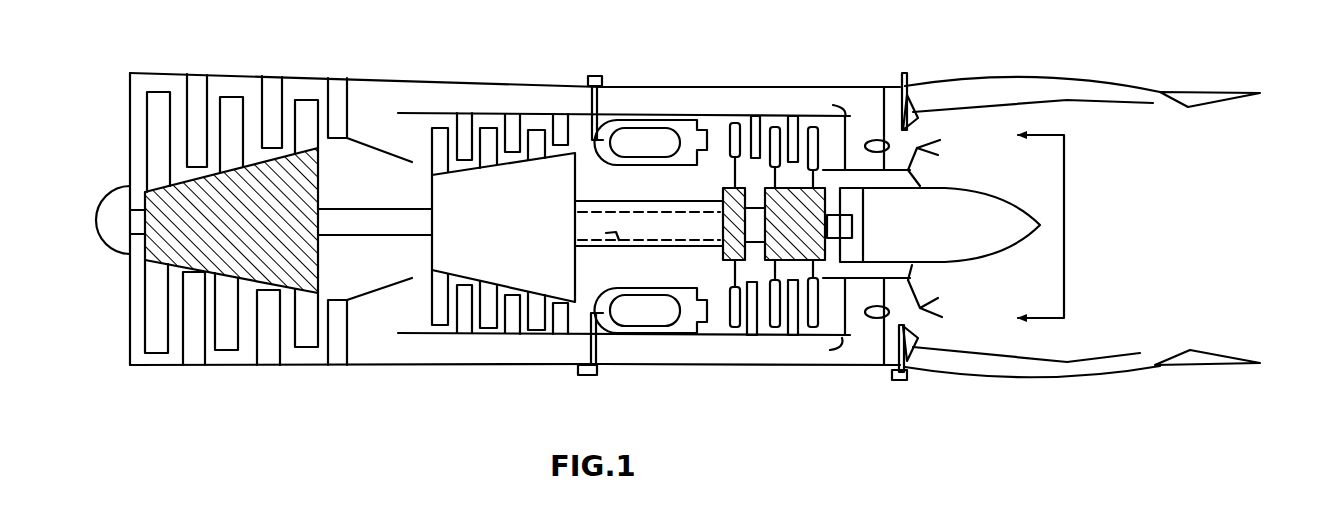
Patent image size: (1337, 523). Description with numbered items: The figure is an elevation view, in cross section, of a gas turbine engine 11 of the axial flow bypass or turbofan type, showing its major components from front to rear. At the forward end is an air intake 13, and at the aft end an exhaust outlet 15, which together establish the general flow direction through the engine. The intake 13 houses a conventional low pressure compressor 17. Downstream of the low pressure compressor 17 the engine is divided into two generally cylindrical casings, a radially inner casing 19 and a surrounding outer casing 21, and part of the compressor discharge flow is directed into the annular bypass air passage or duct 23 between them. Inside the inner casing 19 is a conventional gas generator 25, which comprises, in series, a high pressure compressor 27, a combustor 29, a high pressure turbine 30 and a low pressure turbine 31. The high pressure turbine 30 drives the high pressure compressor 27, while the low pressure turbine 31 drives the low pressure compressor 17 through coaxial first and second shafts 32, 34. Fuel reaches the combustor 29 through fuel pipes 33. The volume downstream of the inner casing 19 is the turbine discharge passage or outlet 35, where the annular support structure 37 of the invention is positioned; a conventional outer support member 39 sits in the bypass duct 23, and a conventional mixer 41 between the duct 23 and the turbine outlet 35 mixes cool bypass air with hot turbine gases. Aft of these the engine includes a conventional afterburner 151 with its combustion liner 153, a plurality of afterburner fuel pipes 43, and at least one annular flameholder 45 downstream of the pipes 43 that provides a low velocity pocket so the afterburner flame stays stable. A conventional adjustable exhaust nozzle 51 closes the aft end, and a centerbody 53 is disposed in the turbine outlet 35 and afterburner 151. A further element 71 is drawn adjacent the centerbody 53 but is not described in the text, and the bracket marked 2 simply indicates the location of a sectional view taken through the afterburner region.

The gas turbine engine 11 is at (717, 67).
The air intake 13 is at (115, 137).
The exhaust outlet 15 is at (1175, 210).
The low pressure compressor 17 is at (170, 257).
The inner casing 19 is at (733, 117).
The outer casing 21 is at (677, 86).
The bypass air passage 23 is at (510, 102).
The gas generator 25 is at (521, 238).
The high pressure compressor 27 is at (472, 307).
The combustor 29 is at (650, 337).
The high pressure turbine 30 is at (727, 320).
The low pressure turbine 31 is at (780, 320).
The first shaft 32 is at (642, 197).
The fuel pipes 33 is at (573, 367).
The second shaft 34 is at (340, 207).
The turbine discharge passage 35 is at (823, 293).
The annular support structure 37 is at (858, 133).
The outer support member 39 is at (872, 362).
The mixer 41 is at (922, 115).
The afterburner fuel pipes 43 is at (913, 80).
The flameholder 45 is at (920, 290).
The adjustable exhaust nozzle 51 is at (1208, 92).
The centerbody 53 is at (972, 193).
The tail cone support 71 is at (852, 202).
The afterburner 151 is at (1120, 281).
The combustion liner 153 is at (1067, 90).
The section line 2- 2 is at (1038, 229).